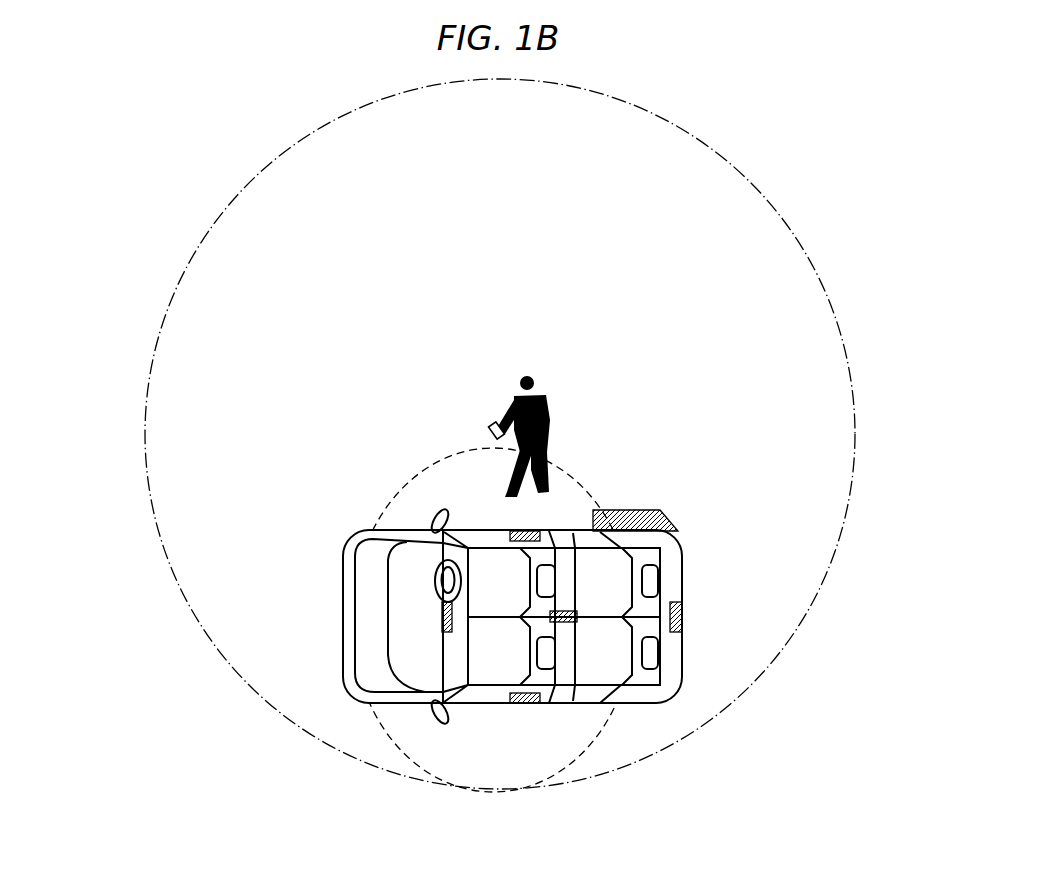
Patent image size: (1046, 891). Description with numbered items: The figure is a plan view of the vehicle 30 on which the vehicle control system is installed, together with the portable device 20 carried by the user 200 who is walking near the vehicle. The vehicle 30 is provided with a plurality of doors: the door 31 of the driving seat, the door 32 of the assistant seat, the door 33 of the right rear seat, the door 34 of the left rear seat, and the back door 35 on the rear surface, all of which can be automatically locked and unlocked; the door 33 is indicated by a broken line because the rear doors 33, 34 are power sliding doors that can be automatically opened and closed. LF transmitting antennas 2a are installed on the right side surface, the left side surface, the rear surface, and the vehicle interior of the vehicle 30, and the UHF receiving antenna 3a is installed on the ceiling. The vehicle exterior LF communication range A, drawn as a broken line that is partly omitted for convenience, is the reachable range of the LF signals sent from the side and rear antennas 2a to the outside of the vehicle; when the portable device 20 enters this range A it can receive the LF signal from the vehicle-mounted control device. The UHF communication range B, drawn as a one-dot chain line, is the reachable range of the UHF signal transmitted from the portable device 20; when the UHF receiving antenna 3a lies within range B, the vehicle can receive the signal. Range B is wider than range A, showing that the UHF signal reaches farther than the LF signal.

The portable device 20 is at (493, 422).
The user 200 is at (548, 402).
The vehicle 30 is at (342, 648).
The door of driving seat 31 is at (467, 546).
The door of assistant seat 32 is at (451, 636).
The door of right rear seat 33 is at (576, 542).
The door of left rear seat 34 is at (601, 692).
The back door 35 is at (683, 571).
The LF transmitting antenna 2a is at (515, 533).
The UHF receiving antenna 3a is at (563, 624).
The vehicle exterior LF communication range A is at (392, 497).
The UHF communication range B is at (772, 210).